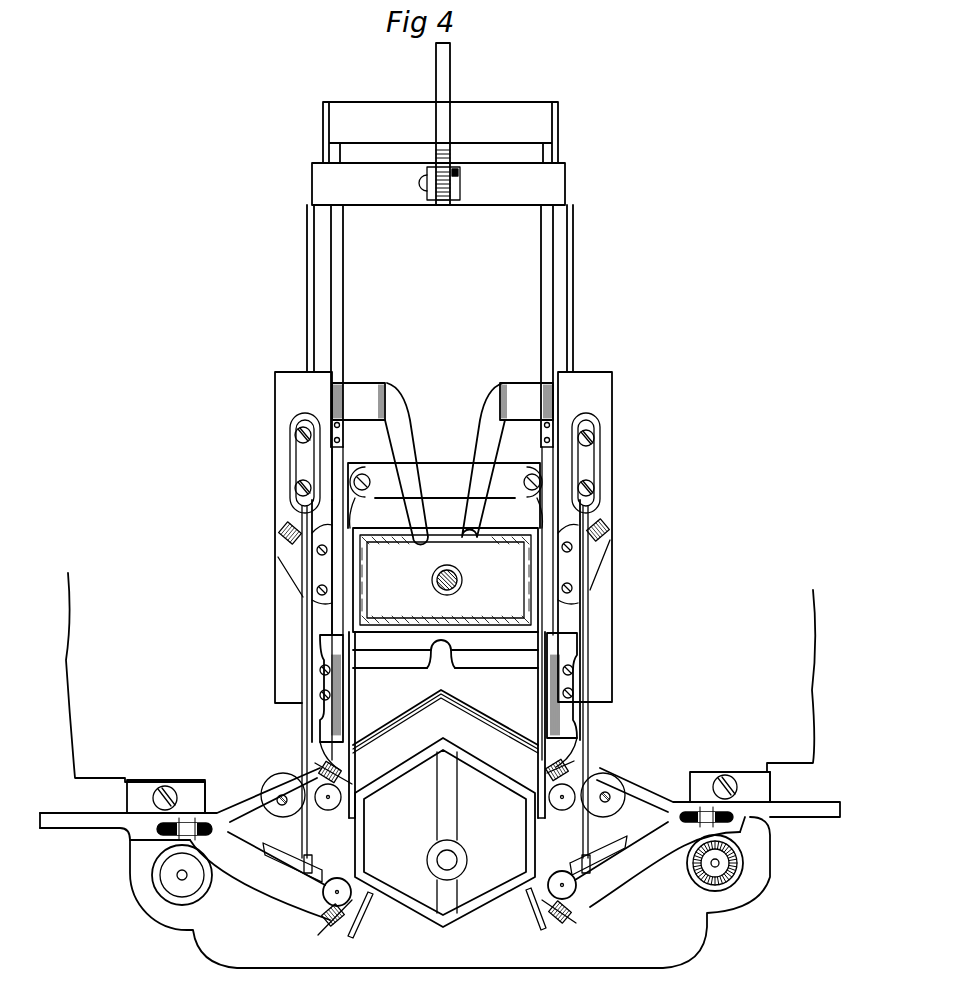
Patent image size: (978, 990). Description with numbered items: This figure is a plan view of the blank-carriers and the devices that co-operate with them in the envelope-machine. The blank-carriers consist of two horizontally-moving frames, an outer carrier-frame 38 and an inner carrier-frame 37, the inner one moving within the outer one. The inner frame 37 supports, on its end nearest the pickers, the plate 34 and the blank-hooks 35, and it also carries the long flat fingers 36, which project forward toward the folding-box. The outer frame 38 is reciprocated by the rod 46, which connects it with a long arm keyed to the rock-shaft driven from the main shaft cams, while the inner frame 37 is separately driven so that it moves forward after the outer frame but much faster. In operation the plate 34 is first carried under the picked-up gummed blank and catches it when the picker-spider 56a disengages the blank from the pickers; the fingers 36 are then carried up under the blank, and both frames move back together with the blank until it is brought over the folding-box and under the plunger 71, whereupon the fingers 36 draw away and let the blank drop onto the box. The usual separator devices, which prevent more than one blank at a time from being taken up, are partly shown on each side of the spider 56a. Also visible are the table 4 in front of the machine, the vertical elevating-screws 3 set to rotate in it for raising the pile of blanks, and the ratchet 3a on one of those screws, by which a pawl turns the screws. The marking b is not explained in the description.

The rod 46 is at (451, 74).
The outer carrier-frame 38 is at (316, 253).
The inner carrier-frame 37 is at (345, 243).
The long flat fingers 36 is at (467, 510).
The plunger 71 is at (445, 580).
The plate 34 is at (445, 710).
The blank-hooks 35 is at (320, 677).
The picker-spider 56a is at (445, 832).
The table 4 is at (476, 950).
The vertical elevating-screws 3 is at (447, 870).
The ratchet 3a is at (743, 863).
The cam follower block b is at (444, 727).